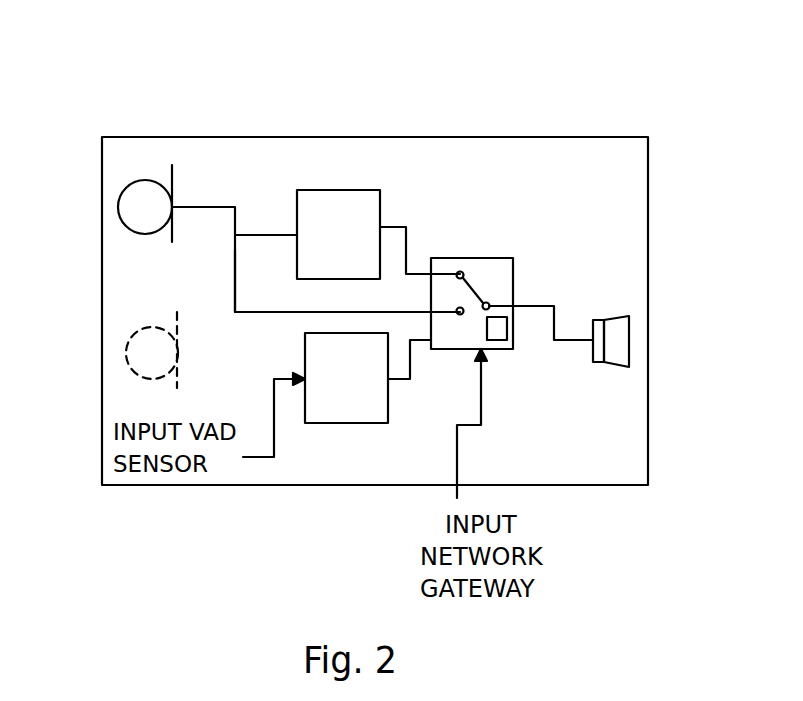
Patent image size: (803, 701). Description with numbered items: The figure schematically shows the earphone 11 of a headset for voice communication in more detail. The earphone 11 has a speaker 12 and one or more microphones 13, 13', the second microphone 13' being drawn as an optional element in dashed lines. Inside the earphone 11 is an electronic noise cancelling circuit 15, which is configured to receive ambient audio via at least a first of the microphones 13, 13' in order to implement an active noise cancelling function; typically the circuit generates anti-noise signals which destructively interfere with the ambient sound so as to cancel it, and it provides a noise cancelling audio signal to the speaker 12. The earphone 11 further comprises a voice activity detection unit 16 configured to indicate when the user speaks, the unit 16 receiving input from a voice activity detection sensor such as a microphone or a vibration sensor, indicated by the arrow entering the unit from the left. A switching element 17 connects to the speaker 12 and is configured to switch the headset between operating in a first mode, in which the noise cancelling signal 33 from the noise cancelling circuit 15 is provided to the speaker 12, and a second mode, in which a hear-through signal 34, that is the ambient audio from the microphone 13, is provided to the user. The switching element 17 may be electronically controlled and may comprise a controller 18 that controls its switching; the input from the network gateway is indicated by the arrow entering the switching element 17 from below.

The earphone 11 is at (152, 40).
The speaker 12 is at (640, 327).
The microphone 13 is at (102, 203).
The microphone 13' is at (100, 344).
The electronic noise cancelling circuit 15 is at (315, 190).
The voice activity detection unit 16 is at (355, 423).
The switching element 17 is at (463, 258).
The controller 18 is at (500, 340).
The noise cancelling signal 33 is at (405, 242).
The hear-through signal 34 is at (234, 287).